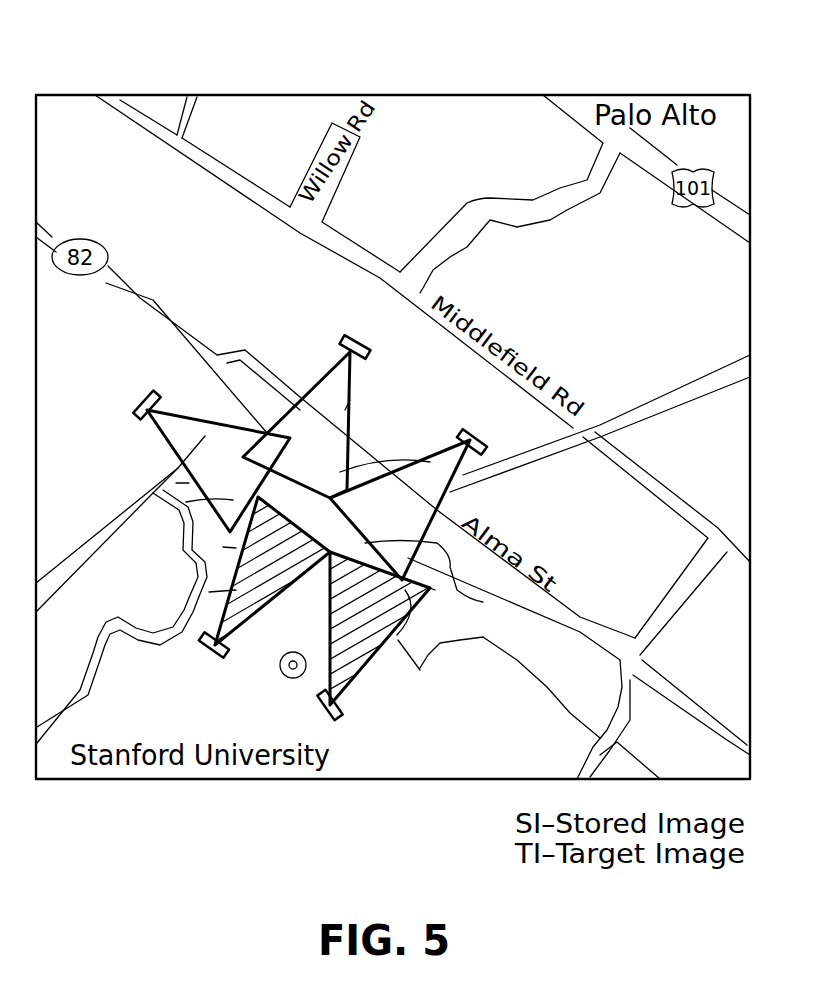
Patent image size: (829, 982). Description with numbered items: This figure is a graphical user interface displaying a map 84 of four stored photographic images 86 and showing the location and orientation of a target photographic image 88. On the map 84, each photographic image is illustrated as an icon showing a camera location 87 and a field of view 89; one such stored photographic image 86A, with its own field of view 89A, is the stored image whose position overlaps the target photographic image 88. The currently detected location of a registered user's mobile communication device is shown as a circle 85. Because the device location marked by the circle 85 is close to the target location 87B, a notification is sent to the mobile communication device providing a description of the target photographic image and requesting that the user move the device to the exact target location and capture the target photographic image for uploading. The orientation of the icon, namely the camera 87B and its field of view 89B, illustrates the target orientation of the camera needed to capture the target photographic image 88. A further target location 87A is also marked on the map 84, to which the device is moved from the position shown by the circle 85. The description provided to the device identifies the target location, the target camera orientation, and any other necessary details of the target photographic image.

The map 84 is at (438, 95).
The circle 85 is at (281, 673).
The stored photographic image 86 is at (350, 400).
The stored photographic image 86A is at (236, 590).
The camera location 87 is at (136, 398).
The target location 87A is at (203, 647).
The target location 87B is at (345, 715).
The target photographic image 88 is at (420, 670).
The field of view 89 is at (307, 480).
The field of view 89A is at (236, 548).
The field of view 89B is at (432, 590).